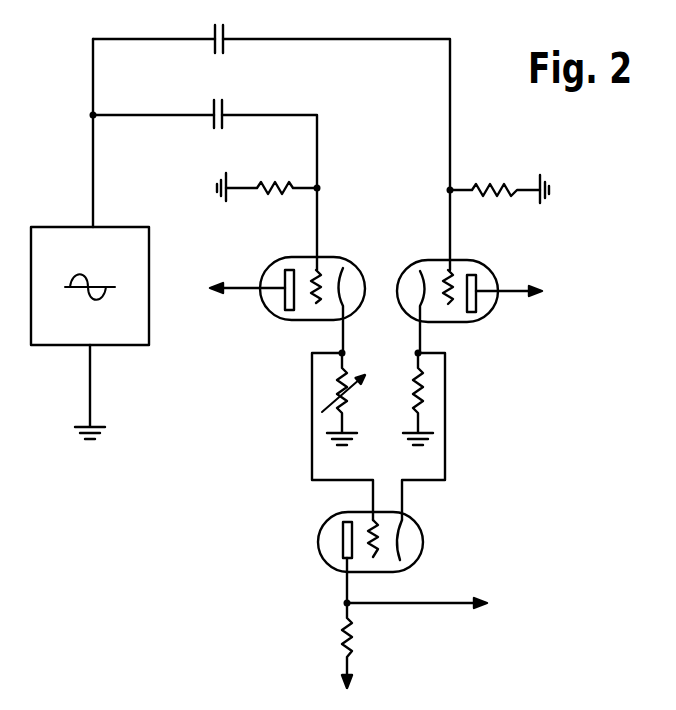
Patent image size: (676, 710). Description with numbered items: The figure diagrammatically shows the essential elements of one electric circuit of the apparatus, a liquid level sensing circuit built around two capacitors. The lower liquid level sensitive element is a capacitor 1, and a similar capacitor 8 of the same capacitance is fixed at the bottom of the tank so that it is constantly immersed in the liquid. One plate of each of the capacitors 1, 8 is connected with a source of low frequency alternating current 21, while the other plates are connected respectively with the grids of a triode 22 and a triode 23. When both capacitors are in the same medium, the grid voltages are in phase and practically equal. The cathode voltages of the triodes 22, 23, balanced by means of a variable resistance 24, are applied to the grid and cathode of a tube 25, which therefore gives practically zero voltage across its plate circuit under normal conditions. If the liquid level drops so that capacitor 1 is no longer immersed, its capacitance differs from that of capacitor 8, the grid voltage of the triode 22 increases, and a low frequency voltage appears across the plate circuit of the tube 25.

The capacitor 8 is at (223, 33).
The capacitor 1 is at (222, 112).
The source of low frequency alternating current 21 is at (67, 327).
The triode 22 is at (333, 265).
The triode 23 is at (481, 272).
The variable resistance 24 is at (341, 373).
The tube 25 is at (408, 540).